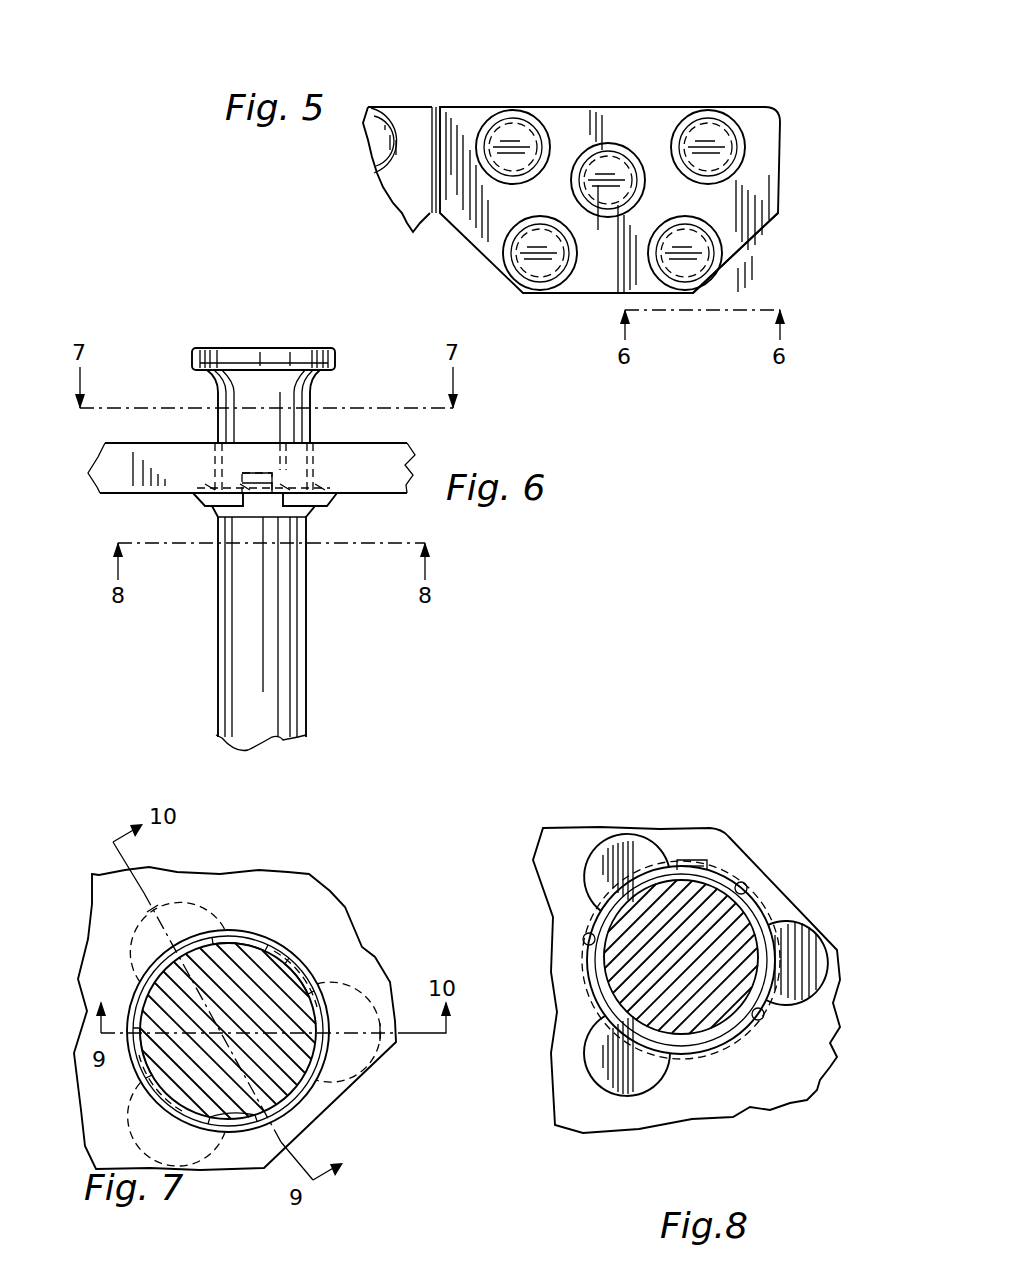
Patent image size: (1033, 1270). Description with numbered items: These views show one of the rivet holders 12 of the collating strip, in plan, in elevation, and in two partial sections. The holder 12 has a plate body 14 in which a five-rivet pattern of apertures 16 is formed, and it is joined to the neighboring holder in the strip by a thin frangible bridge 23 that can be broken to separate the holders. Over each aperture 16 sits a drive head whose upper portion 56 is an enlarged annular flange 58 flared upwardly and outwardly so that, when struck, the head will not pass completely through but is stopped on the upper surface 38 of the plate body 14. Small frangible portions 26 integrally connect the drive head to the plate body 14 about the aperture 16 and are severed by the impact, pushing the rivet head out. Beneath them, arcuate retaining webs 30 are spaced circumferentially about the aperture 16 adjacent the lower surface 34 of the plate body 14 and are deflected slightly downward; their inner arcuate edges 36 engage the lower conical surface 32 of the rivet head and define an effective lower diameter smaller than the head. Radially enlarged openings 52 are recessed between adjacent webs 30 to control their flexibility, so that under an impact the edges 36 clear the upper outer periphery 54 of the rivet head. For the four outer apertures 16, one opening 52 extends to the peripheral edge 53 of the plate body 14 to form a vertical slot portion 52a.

In FIG. 5, the rivet holder 12 is at (768, 72).
In FIG. 6, the plate body 14 is at (95, 478).
In FIG. 6, the aperture 16 is at (313, 443).
In FIG. 7, the aperture 16 is at (151, 966).
In FIG. 8, the aperture 16 is at (764, 912).
In FIG. 5, the frangible bridge 23 is at (434, 128).
In FIG. 7, the frangible portion 26 is at (262, 946).
In FIG. 6, the retaining web 30 is at (323, 497).
In FIG. 8, the retaining web 30 is at (703, 865).
In FIG. 8, the lower conical surface 32 is at (688, 868).
In FIG. 6, the lower surface 34 is at (118, 498).
In FIG. 8, the lower surface 34 is at (795, 1087).
In FIG. 8, the inner arcuate edge 36 is at (745, 884).
In FIG. 7, the upper surface 38 is at (316, 927).
In FIG. 8, the opening 52 is at (633, 847).
In FIG. 6, the vertical slot portion 52a is at (262, 488).
In FIG. 5, the peripheral edge 53 is at (757, 240).
In FIG. 6, the upper outer periphery 54 is at (243, 485).
In FIG. 6, the upper portion 56 is at (356, 347).
In FIG. 5, the enlarged annular flange 58 is at (526, 112).